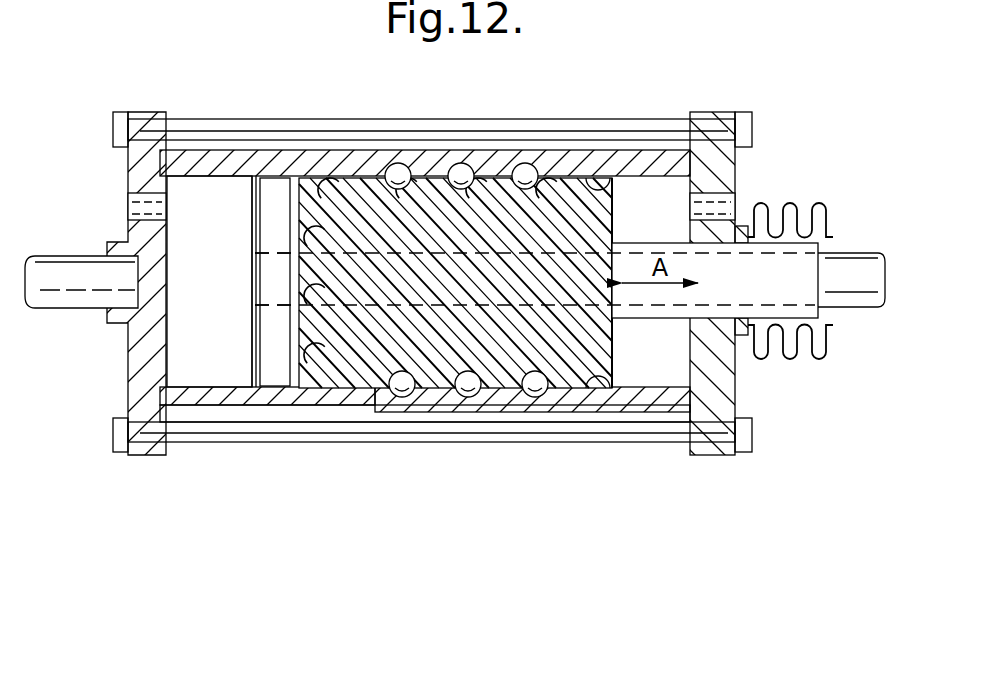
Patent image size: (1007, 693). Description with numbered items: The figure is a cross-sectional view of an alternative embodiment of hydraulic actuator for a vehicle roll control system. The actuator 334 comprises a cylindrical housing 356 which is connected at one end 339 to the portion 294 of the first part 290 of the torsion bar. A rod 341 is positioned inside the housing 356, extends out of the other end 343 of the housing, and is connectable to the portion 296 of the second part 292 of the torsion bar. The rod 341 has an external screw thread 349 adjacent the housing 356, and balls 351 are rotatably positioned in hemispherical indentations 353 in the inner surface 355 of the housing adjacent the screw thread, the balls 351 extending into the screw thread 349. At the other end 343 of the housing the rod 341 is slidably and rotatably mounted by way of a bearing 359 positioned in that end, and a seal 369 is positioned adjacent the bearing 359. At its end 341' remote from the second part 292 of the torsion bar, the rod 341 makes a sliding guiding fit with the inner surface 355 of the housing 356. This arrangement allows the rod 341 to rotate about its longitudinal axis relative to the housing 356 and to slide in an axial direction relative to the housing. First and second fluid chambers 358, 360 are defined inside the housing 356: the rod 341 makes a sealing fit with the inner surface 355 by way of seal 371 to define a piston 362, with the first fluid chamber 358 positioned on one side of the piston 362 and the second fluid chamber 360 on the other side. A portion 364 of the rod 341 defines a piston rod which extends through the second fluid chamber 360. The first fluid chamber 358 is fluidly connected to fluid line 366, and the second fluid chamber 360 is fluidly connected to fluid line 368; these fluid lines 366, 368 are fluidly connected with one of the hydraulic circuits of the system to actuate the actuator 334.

The actuator 334 is at (205, 452).
The one end 339 is at (142, 348).
The other end 343 is at (730, 392).
The fluid line 366 is at (128, 205).
The fluid line 368 is at (736, 205).
The portion 294 is at (84, 268).
The first part 290 is at (70, 298).
The first fluid chamber 358 is at (212, 190).
The seal 371 is at (268, 392).
The end 341' is at (238, 282).
The inner surface 355 is at (630, 378).
The cylindrical housing 356 is at (296, 394).
The piston 362 is at (440, 372).
The rod 341 is at (647, 238).
The external screw thread 349 is at (430, 180).
The balls 351 is at (465, 168).
The hemispherical indentations 353 is at (470, 392).
The second fluid chamber 360 is at (668, 370).
The portion 364 is at (737, 294).
The bearing 359 is at (745, 224).
The seal 369 is at (758, 350).
The portion 296 is at (862, 262).
The second part 292 is at (862, 300).